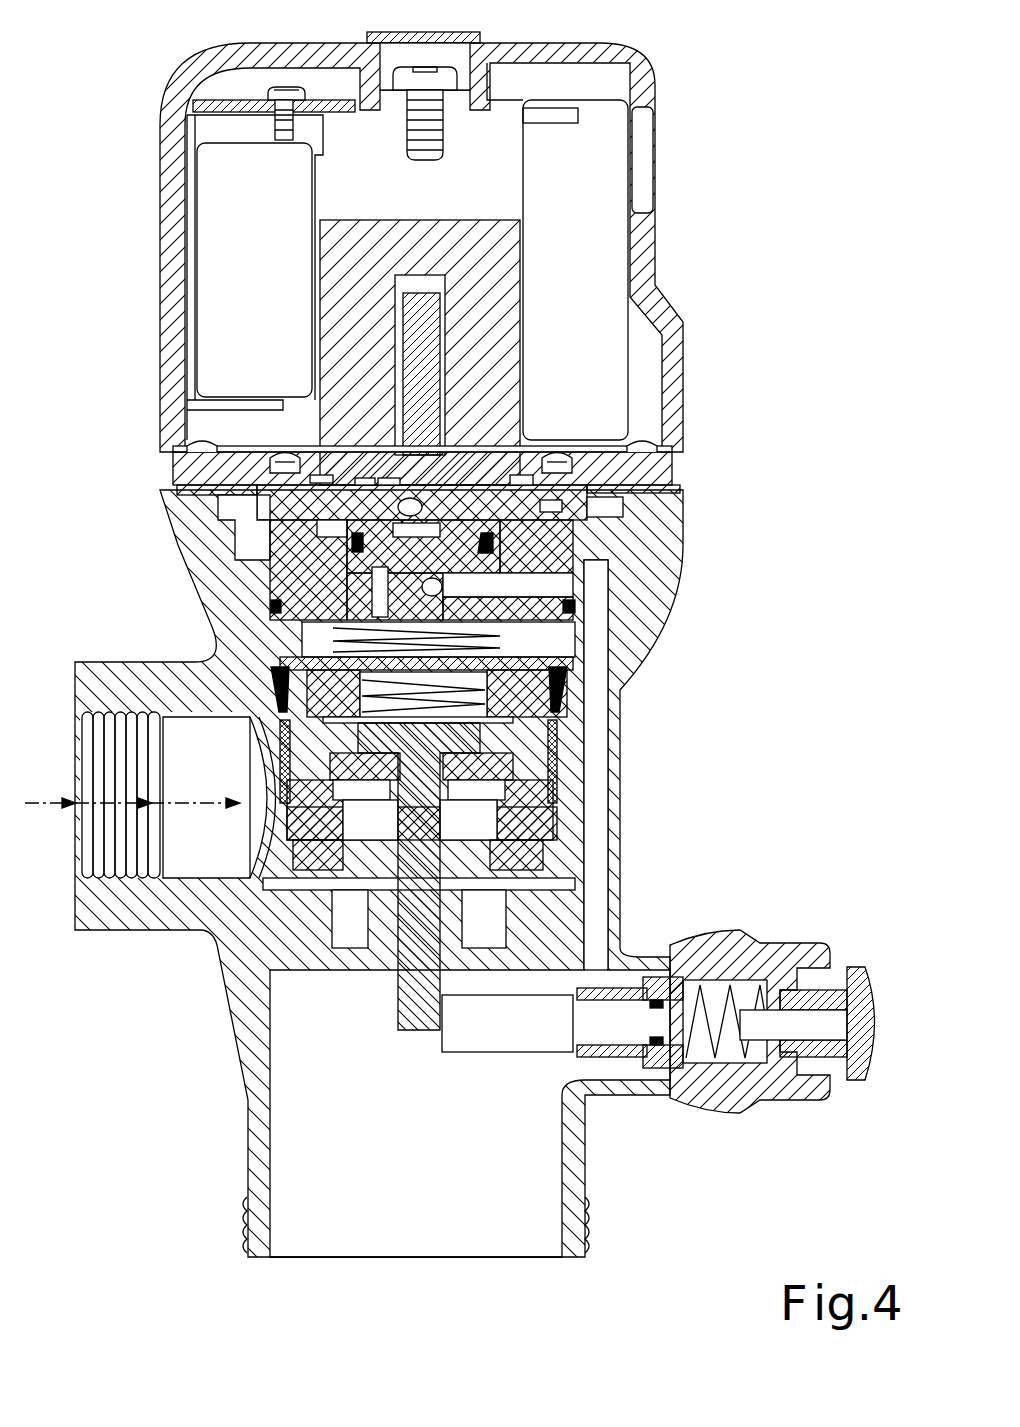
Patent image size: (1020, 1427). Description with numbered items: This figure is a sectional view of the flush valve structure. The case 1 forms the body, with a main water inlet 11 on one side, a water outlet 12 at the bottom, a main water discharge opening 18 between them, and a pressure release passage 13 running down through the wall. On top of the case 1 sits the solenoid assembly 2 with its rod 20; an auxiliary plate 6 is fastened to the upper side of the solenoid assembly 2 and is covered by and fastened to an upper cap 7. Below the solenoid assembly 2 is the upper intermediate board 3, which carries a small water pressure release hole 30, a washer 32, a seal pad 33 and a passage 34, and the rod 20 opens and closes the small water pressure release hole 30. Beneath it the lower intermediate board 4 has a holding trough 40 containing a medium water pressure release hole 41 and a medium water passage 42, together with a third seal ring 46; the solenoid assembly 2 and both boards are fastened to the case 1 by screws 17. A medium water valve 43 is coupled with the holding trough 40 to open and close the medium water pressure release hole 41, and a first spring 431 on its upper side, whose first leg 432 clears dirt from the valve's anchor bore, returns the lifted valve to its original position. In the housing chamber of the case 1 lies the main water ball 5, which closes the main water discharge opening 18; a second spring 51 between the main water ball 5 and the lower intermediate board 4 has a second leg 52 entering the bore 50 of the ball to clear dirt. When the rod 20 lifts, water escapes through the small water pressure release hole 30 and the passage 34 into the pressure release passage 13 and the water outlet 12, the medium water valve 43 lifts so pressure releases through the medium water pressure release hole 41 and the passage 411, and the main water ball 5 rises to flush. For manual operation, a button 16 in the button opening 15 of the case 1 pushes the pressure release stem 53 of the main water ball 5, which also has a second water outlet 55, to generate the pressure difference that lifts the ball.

The case 1 is at (236, 1021).
The solenoid assembly 2 is at (392, 222).
The upper intermediate board 3 is at (683, 467).
The lower intermediate board 4 is at (263, 546).
The main water ball 5 is at (572, 746).
The auxiliary plate 6 is at (245, 103).
The upper cap 7 is at (658, 72).
The main water inlet 11 is at (180, 878).
The water outlet 12 is at (345, 1258).
The pressure release passage 13 is at (600, 838).
The button opening 15 is at (713, 1090).
The button 16 is at (860, 997).
The screws 17 is at (187, 442).
The main water discharge opening 18 is at (317, 890).
The rod 20 is at (407, 312).
The small water pressure release hole 30 is at (458, 493).
The washer 32 is at (383, 476).
The seal pad 33 is at (673, 488).
The passage 34 is at (551, 510).
The holding trough 40 is at (505, 537).
The medium water pressure release hole 41 is at (573, 606).
The medium water passage 42 is at (377, 580).
The medium water valve 43 is at (330, 567).
The third seal ring 46 is at (270, 607).
The bore 50 is at (283, 735).
The second spring 51 is at (500, 636).
The second leg 52 is at (300, 637).
The pressure release stem 53 is at (420, 998).
The second water outlet 55 is at (500, 655).
The passage 411 is at (563, 583).
The first spring 431 is at (363, 475).
The first leg 432 is at (445, 513).